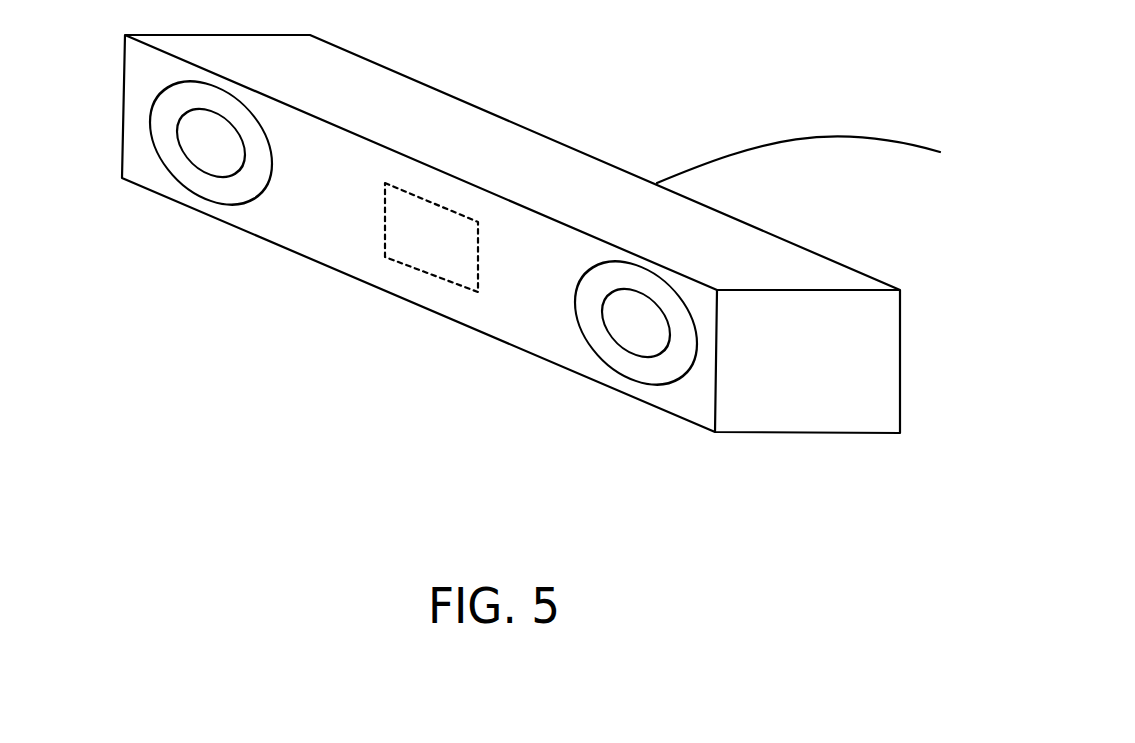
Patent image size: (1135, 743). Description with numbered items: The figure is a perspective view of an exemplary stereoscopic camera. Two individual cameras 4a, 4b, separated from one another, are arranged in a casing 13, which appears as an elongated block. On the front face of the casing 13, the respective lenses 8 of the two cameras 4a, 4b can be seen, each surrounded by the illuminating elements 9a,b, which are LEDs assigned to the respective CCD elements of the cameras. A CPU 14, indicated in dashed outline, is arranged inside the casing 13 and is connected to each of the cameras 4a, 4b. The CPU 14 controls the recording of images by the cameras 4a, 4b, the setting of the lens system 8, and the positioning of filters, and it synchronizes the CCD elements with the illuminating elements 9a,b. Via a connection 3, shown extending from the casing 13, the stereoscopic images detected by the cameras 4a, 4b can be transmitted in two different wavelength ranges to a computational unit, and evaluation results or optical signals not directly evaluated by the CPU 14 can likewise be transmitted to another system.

The connection 3 is at (797, 143).
The camera 4a is at (172, 215).
The camera 4b is at (600, 400).
The lens 8 is at (202, 137).
The illuminating elements 9a,b is at (163, 113).
The casing 13 is at (287, 252).
The CPU 14 is at (440, 205).